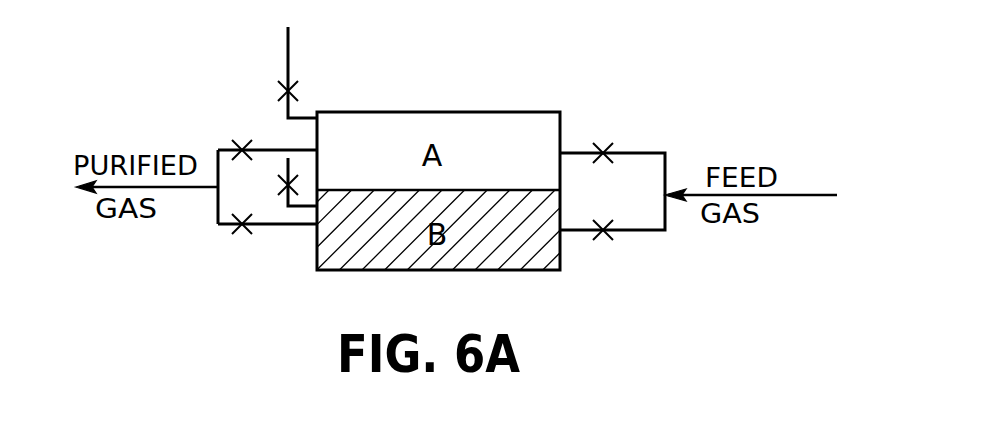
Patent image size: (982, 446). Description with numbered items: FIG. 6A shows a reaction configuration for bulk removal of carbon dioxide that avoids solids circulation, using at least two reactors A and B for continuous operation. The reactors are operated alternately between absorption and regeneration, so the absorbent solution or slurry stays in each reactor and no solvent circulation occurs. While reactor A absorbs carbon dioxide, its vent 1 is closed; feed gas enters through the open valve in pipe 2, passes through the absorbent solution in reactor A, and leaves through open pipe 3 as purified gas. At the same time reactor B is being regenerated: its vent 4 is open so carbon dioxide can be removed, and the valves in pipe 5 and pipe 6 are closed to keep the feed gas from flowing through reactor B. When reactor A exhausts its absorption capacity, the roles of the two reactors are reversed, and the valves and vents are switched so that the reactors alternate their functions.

The vent 1 is at (290, 53).
The pipe 2 is at (647, 153).
The pipe 3 is at (266, 148).
The vent 4 is at (282, 180).
The pipe 5 is at (652, 232).
The pipe 6 is at (265, 228).